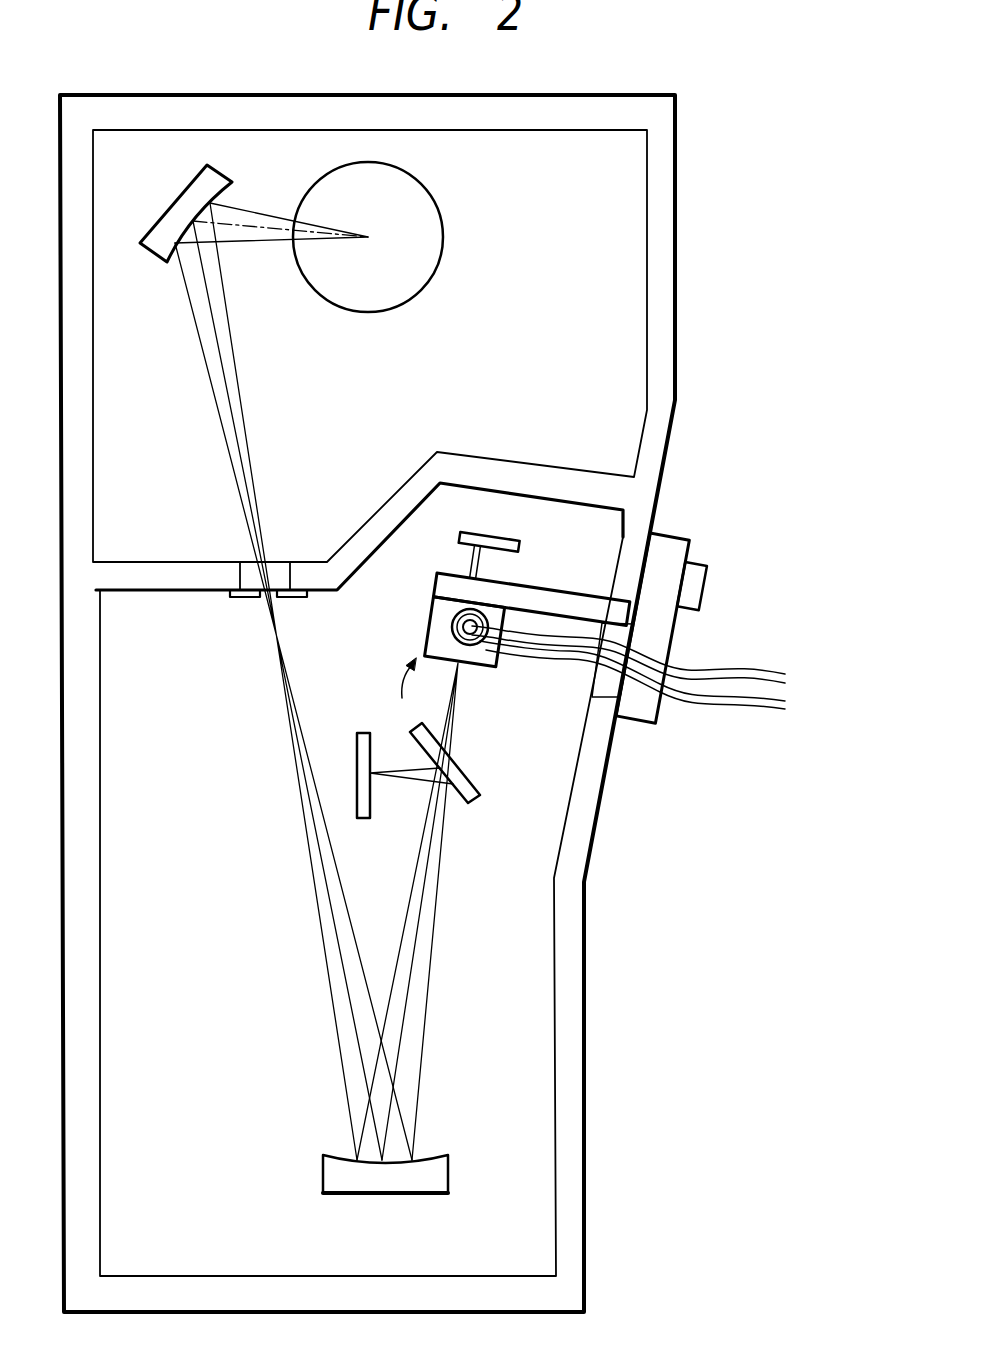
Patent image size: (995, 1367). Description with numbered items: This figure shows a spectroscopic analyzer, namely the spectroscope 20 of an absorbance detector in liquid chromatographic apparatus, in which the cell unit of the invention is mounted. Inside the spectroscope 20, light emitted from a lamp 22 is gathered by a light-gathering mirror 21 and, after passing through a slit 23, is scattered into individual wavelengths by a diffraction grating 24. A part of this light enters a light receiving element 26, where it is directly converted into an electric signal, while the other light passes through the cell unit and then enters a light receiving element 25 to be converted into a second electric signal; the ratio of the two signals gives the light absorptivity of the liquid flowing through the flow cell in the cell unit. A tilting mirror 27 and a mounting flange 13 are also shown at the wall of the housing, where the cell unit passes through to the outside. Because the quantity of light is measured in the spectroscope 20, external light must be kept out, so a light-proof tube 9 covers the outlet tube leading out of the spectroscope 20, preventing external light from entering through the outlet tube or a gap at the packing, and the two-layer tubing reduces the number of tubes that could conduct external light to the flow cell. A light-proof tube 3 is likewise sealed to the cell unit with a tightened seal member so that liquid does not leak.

The light-proof tube 3 is at (712, 705).
The light-proof tube 9 is at (745, 672).
The flange 13 is at (688, 530).
The spectroscope 20 is at (586, 935).
The light-gathering mirror 21 is at (152, 262).
The lamp 22 is at (333, 292).
The slit 23 is at (245, 598).
The diffraction grating 24 is at (325, 1175).
The light receiving element 25 is at (520, 542).
The light receiving element 26 is at (363, 730).
The tilting mirror 27 is at (458, 713).